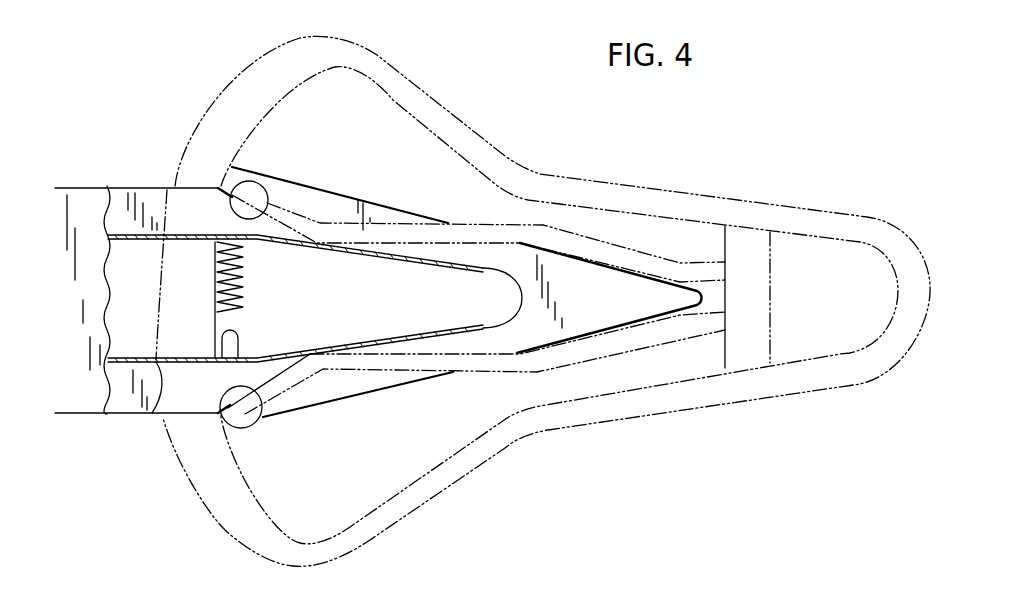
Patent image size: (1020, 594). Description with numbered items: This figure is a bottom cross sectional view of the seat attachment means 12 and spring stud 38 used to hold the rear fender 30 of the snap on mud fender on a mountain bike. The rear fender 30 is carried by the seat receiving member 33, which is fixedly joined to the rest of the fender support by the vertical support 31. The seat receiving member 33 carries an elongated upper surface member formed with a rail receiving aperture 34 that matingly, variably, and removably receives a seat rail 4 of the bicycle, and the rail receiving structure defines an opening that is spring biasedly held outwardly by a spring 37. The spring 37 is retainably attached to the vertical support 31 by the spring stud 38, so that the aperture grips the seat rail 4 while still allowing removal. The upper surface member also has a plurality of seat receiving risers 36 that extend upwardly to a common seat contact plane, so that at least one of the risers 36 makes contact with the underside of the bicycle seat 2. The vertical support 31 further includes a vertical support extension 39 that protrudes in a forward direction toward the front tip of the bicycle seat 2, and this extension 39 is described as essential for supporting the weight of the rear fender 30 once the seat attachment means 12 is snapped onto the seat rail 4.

The bicycle seat 2 is at (652, 203).
The seat rail 4 is at (620, 340).
The seat attachment means 12 is at (414, 168).
The rear fender 30 is at (84, 212).
The vertical support 31 is at (167, 188).
The seat receiving member 33 is at (115, 395).
The rail receiving aperture 34 is at (262, 184).
The seat receiving risers 36 is at (705, 302).
The spring 37 is at (247, 282).
The spring stud 38 is at (240, 341).
The vertical support extension 39 is at (436, 246).